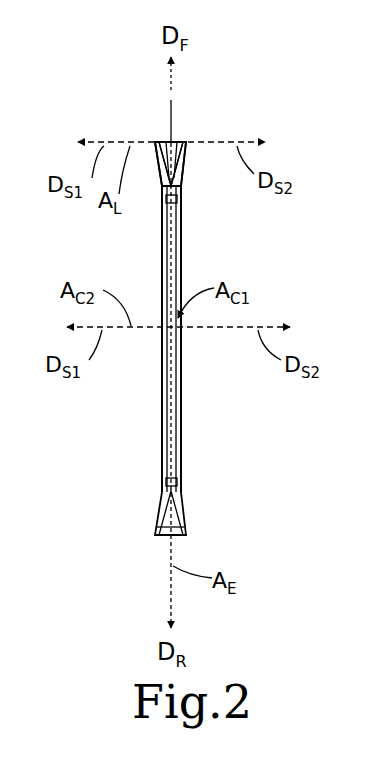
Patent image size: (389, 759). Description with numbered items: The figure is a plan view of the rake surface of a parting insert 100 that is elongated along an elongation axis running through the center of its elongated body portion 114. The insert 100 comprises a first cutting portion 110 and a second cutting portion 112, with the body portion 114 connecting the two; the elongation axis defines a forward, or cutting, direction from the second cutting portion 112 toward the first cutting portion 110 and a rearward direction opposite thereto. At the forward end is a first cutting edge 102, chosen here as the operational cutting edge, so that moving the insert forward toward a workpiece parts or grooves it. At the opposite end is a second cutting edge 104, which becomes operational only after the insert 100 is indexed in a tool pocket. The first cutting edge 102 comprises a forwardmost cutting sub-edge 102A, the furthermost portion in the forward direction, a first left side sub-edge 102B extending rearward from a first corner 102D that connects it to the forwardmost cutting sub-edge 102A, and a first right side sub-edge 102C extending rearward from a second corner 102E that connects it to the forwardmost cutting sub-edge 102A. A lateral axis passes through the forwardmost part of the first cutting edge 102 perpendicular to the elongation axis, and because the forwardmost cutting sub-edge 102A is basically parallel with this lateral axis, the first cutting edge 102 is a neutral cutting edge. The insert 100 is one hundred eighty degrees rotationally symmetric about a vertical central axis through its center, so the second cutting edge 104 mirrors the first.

The insert 100 is at (195, 305).
The first cutting edge 102 is at (195, 139).
The forwardmost cutting sub-edge 102A is at (157, 139).
The first left side sub-edge 102B is at (160, 165).
The first right side sub-edge 102C is at (184, 160).
The first corner 102D is at (156, 141).
The second corner 102E is at (187, 141).
The second cutting edge 104 is at (178, 537).
The first cutting portion 110 is at (195, 139).
The second cutting portion 112 is at (174, 538).
The elongated body portion 114 is at (143, 410).